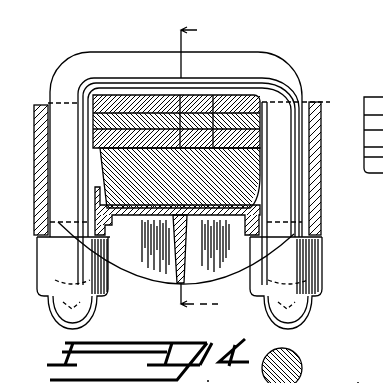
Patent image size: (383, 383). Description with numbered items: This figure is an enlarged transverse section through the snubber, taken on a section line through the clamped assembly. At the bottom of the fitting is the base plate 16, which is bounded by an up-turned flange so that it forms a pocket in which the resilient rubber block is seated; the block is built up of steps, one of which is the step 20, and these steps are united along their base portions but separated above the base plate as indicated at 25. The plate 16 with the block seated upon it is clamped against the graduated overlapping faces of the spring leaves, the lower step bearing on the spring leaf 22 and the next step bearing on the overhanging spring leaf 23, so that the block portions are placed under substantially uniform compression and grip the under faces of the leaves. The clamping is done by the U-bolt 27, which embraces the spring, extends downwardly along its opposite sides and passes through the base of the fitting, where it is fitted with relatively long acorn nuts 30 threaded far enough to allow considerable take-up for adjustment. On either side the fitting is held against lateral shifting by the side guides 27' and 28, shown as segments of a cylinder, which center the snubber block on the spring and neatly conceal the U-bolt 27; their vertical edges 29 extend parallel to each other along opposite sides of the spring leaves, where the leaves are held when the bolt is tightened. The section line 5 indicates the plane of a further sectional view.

The U-bolt 27 is at (176, 131).
The vertical edges 29 is at (92, 120).
The overhanging spring leaf 23 is at (202, 117).
The side guide 27' is at (27, 157).
The side guide 28 is at (322, 113).
The spring leaf 22 is at (262, 134).
The base plate 16 is at (268, 222).
The acorn nut 30 is at (292, 267).
The section line 5- 5 is at (183, 168).
The step of the resilient block 20 is at (369, 373).
The separation between block portions 25 is at (219, 375).